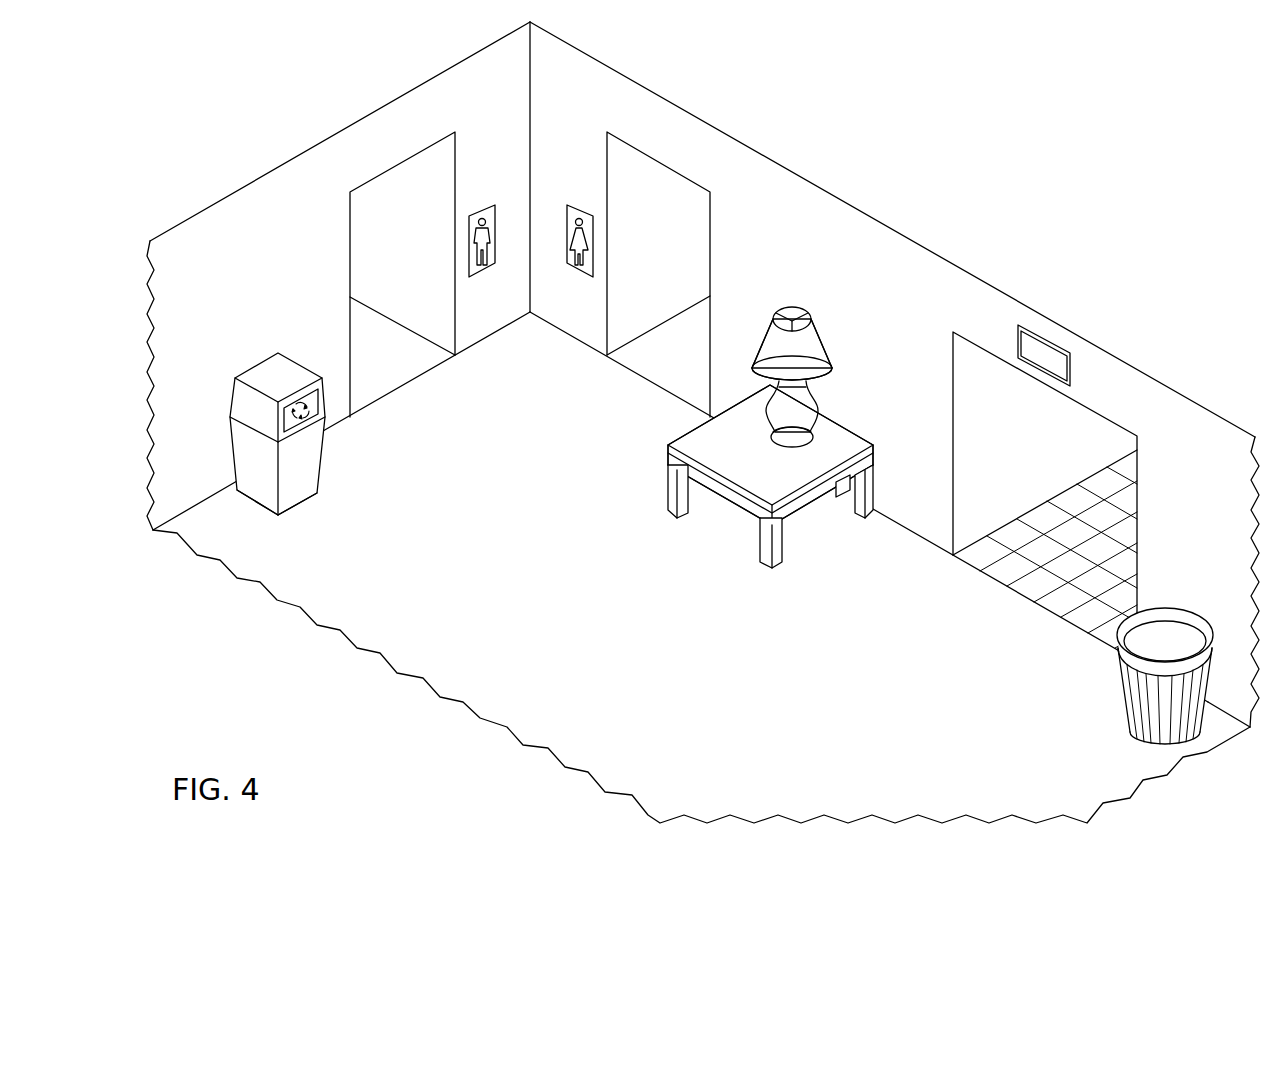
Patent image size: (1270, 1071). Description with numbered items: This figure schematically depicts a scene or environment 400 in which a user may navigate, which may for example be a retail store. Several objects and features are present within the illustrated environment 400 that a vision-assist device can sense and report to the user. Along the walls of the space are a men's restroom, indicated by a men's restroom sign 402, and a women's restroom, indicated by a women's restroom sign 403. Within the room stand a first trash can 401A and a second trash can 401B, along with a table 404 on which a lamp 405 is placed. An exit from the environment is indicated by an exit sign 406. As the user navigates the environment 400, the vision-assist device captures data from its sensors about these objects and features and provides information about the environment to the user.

The environment 400 is at (703, 422).
The first trash can 401A is at (260, 372).
The second trash can 401B is at (1120, 690).
The men's restroom sign 402 is at (490, 195).
The women's restroom sign 403 is at (572, 195).
The table 404 is at (797, 455).
The lamp 405 is at (781, 329).
The exit sign 406 is at (1069, 320).